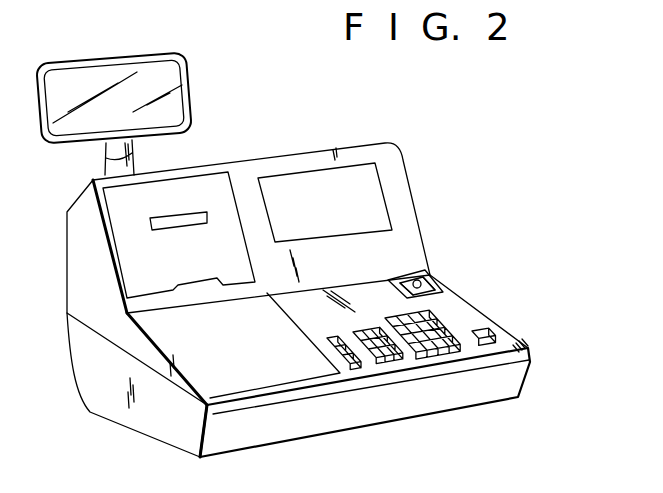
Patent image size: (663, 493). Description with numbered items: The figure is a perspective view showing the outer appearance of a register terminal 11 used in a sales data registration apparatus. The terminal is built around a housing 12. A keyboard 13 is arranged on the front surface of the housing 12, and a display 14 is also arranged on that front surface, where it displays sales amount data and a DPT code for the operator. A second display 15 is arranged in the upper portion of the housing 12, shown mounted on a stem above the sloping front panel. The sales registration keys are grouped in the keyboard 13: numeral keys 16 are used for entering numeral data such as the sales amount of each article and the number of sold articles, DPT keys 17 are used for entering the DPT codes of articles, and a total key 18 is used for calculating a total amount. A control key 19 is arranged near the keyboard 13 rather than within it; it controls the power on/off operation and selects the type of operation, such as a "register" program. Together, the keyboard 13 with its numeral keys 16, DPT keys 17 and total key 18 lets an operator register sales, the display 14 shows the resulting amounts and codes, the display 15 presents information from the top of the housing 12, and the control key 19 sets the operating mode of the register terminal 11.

The register terminal 11 is at (307, 246).
The housing 12 is at (369, 142).
The keyboard 13 is at (527, 341).
The display 14 is at (373, 187).
The display 15 is at (190, 65).
The numeral keys 16 is at (402, 362).
The DPT keys 17 is at (457, 353).
The total key 18 is at (488, 330).
The control key 19 is at (432, 282).